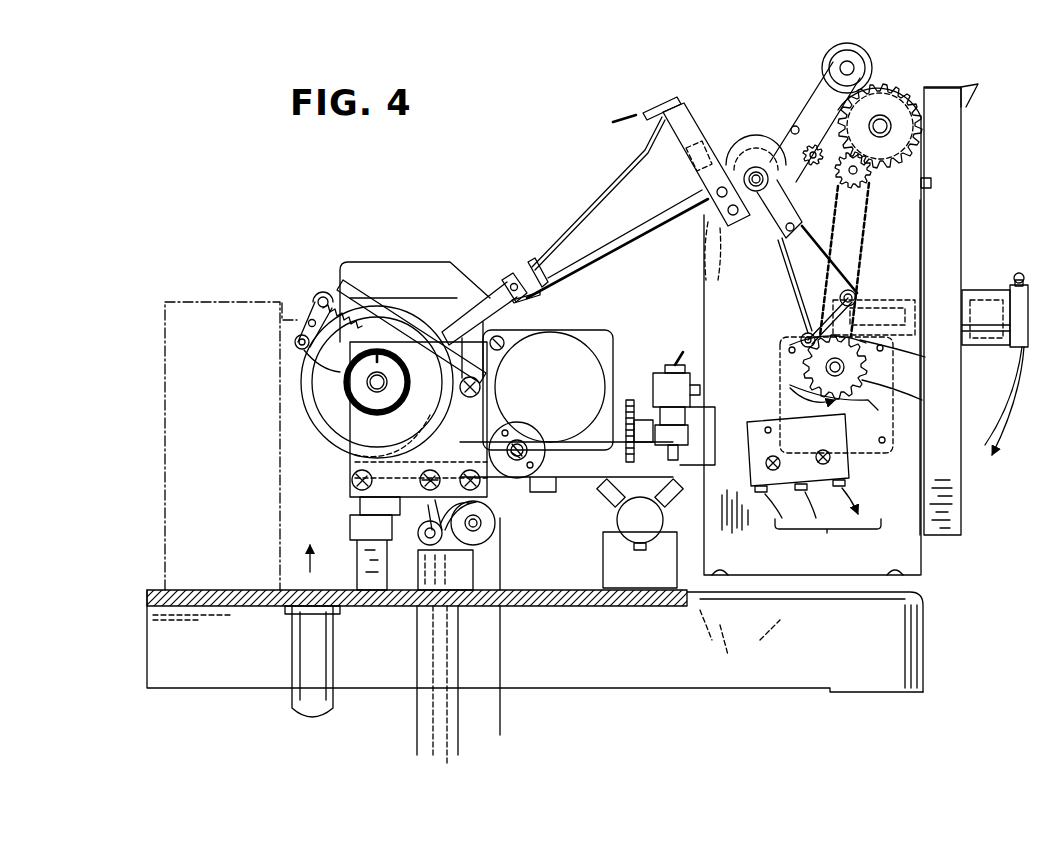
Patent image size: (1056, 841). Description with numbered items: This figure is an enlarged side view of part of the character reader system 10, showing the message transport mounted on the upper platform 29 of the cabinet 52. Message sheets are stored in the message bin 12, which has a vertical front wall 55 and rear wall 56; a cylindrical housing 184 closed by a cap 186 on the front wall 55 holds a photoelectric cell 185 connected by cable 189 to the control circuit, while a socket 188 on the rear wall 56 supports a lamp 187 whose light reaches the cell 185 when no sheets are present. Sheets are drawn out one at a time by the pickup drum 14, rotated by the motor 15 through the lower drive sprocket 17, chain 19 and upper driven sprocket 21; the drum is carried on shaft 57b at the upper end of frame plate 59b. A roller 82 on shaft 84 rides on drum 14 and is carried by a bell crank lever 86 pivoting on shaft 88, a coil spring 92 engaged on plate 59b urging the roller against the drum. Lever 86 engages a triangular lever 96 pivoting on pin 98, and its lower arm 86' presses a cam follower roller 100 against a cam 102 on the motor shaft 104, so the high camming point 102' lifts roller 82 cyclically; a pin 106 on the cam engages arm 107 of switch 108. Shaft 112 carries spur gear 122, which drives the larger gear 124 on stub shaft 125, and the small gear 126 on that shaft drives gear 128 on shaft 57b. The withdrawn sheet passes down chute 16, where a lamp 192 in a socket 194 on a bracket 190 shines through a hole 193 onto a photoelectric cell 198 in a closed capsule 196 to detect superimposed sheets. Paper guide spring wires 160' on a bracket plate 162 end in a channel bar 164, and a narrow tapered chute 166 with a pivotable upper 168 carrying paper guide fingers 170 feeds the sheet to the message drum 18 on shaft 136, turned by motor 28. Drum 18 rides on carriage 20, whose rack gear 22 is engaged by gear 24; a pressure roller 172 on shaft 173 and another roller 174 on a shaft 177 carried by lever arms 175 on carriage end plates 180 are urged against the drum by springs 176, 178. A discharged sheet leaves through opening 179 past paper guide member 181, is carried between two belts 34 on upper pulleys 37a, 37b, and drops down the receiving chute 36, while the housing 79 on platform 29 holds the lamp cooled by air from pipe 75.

The character reader system 10 is at (164, 186).
The message bin 12 is at (963, 478).
The pickup drum 14 is at (905, 100).
The motor 15 is at (893, 425).
The chute 16 is at (651, 225).
The lower drive sprocket 17 is at (805, 362).
The message drum 18 is at (407, 318).
The chain 19 is at (880, 272).
The carriage 20 is at (350, 465).
The upper driven sprocket 21 is at (881, 114).
The rack gear 22 is at (652, 462).
The gear 24 is at (630, 400).
The motor 28 is at (573, 340).
The platform 29 is at (592, 608).
The belts 34 is at (456, 745).
The message sheet receiving chute 36 is at (427, 720).
The pulley 37a is at (425, 540).
The upper pulley 37b is at (485, 521).
The cabinet 52 is at (915, 620).
The front wall 55 is at (962, 215).
The rear wall 56 is at (925, 127).
The shaft 57b is at (897, 96).
The frame plate 59b is at (900, 540).
The pipe 75 is at (292, 710).
The housing 79 is at (195, 300).
The roller 82 is at (852, 42).
The shaft 84 is at (842, 62).
The bell crank lever 86 is at (815, 117).
The lower arm 86' is at (768, 217).
The shaft 88 is at (750, 170).
The coil spring 92 is at (797, 127).
The triangular shaped lever 96 is at (780, 285).
The pin 98 is at (853, 278).
The cam follower roller 100 is at (800, 335).
The cam 102 is at (913, 396).
The high camming point 102' is at (798, 359).
The shaft 104 is at (850, 368).
The pin 106 is at (912, 353).
The arm 107 is at (852, 410).
The switch 108 is at (752, 424).
The shaft 112 is at (812, 166).
The spur gear 122 is at (767, 110).
The gear 124 is at (905, 172).
The stub shaft 125 is at (840, 190).
The small gear 126 is at (858, 190).
The gear 128 is at (925, 152).
The shaft 136 is at (386, 395).
The paper guide spring wires 160' is at (598, 193).
The bracket plate 162 is at (548, 272).
The channel bar 164 is at (770, 95).
The tapered chute 166 is at (515, 303).
The pivotable upper 168 is at (513, 270).
The paper guide fingers 170 is at (478, 290).
The pressure roller 172 is at (322, 292).
The shaft 173 is at (315, 300).
The roller 174 is at (296, 346).
The lever arms 175 is at (305, 310).
The spring 176 is at (355, 304).
The pin 177 is at (292, 340).
The spring 178 is at (335, 372).
The opening 179 is at (416, 429).
The carriage end plates 180 is at (333, 280).
The paper guide member 181 is at (428, 425).
The cylindrical housing 184 is at (1012, 285).
The photoelectric cell 185 is at (962, 290).
The cap 186 is at (1015, 345).
The lamp 187 is at (910, 300).
The socket 188 is at (885, 300).
The cable 189 is at (1012, 385).
The bracket 190 is at (700, 230).
The lamp 192 is at (720, 130).
The hole 193 is at (706, 180).
The socket 194 is at (705, 105).
The capsule 196 is at (762, 282).
The photoelectric cell 198 is at (702, 258).